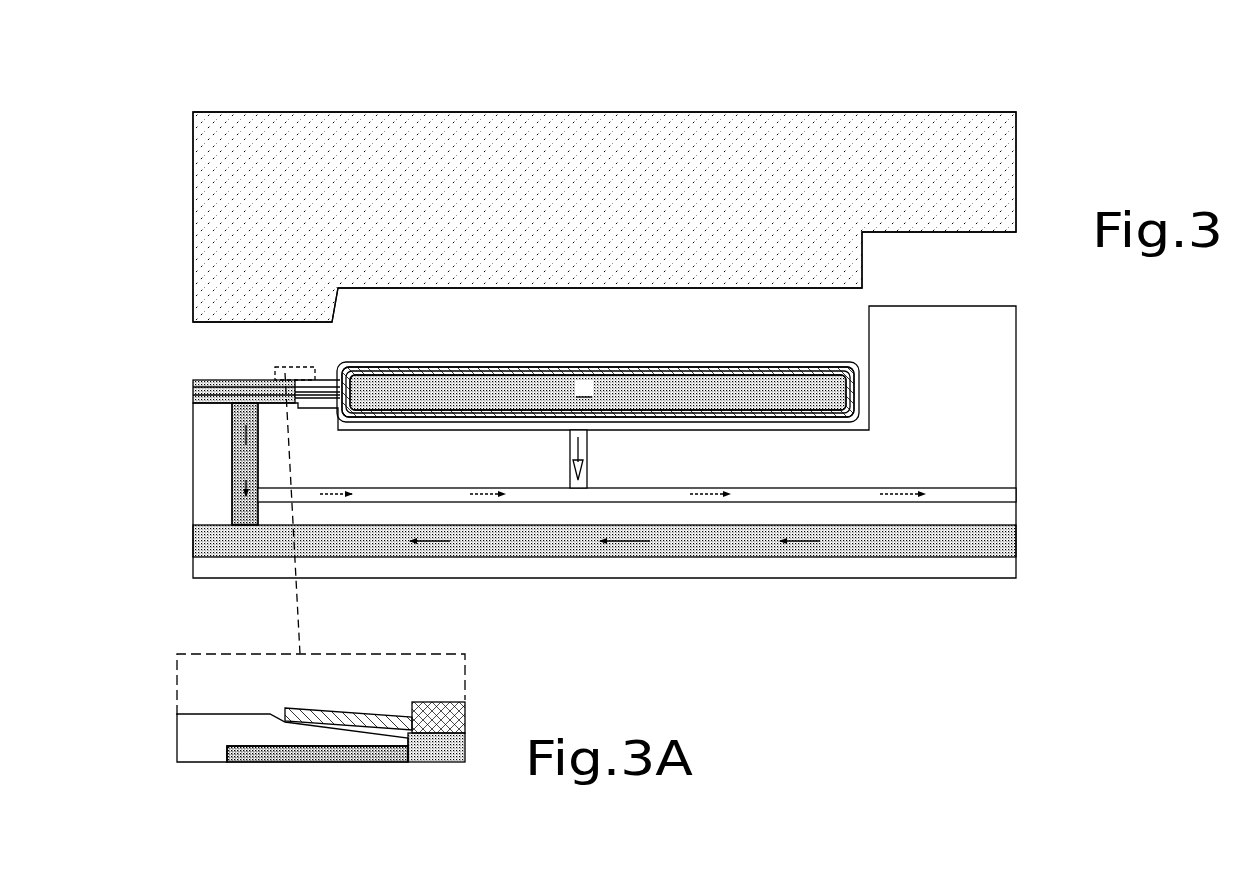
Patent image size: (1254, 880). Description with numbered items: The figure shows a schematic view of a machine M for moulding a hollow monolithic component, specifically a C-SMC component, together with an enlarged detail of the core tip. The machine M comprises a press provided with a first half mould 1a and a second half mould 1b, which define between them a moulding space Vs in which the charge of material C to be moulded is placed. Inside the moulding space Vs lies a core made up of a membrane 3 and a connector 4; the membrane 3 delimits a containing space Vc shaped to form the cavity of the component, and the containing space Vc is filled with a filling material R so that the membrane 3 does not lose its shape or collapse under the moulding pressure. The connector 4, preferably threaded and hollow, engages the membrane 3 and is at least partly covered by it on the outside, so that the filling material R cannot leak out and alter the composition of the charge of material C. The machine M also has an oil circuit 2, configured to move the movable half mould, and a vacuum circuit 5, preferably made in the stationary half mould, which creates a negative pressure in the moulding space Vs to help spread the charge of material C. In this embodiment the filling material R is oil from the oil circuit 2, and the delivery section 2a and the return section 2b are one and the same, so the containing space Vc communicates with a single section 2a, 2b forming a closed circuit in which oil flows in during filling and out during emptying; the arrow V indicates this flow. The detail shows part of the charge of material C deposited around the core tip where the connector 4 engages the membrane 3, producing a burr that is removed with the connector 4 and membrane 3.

In FIG. 3, the machine M is at (260, 125).
In FIG. 3, the second half mould 1b is at (1050, 160).
In FIG. 3, the first half mould 1a is at (1045, 398).
In FIG. 3, the connector 4 is at (203, 380).
In FIG. 3A, the connector 4 is at (220, 717).
In FIG. 3, the delivery section 2a is at (232, 487).
In FIG. 3A, the delivery section 2a is at (378, 756).
In FIG. 3, the return section 2b is at (161, 464).
In FIG. 3A, the return section 2b is at (345, 786).
In FIG. 3, the vacuum circuit 5 is at (992, 506).
In FIG. 3, the oil circuit 2 is at (880, 562).
In FIG. 3, the charge of material C is at (520, 358).
In FIG. 3A, the charge of material C is at (458, 702).
In FIG. 3, the membrane 3 is at (680, 360).
In FIG. 3A, the membrane 3 is at (465, 742).
In FIG. 3, the containing space Vc is at (700, 395).
In FIG. 3, the moulding space Vs is at (820, 325).
In FIG. 3, the filling material R is at (584, 388).
In FIG. 3, the vertical channel V is at (578, 459).